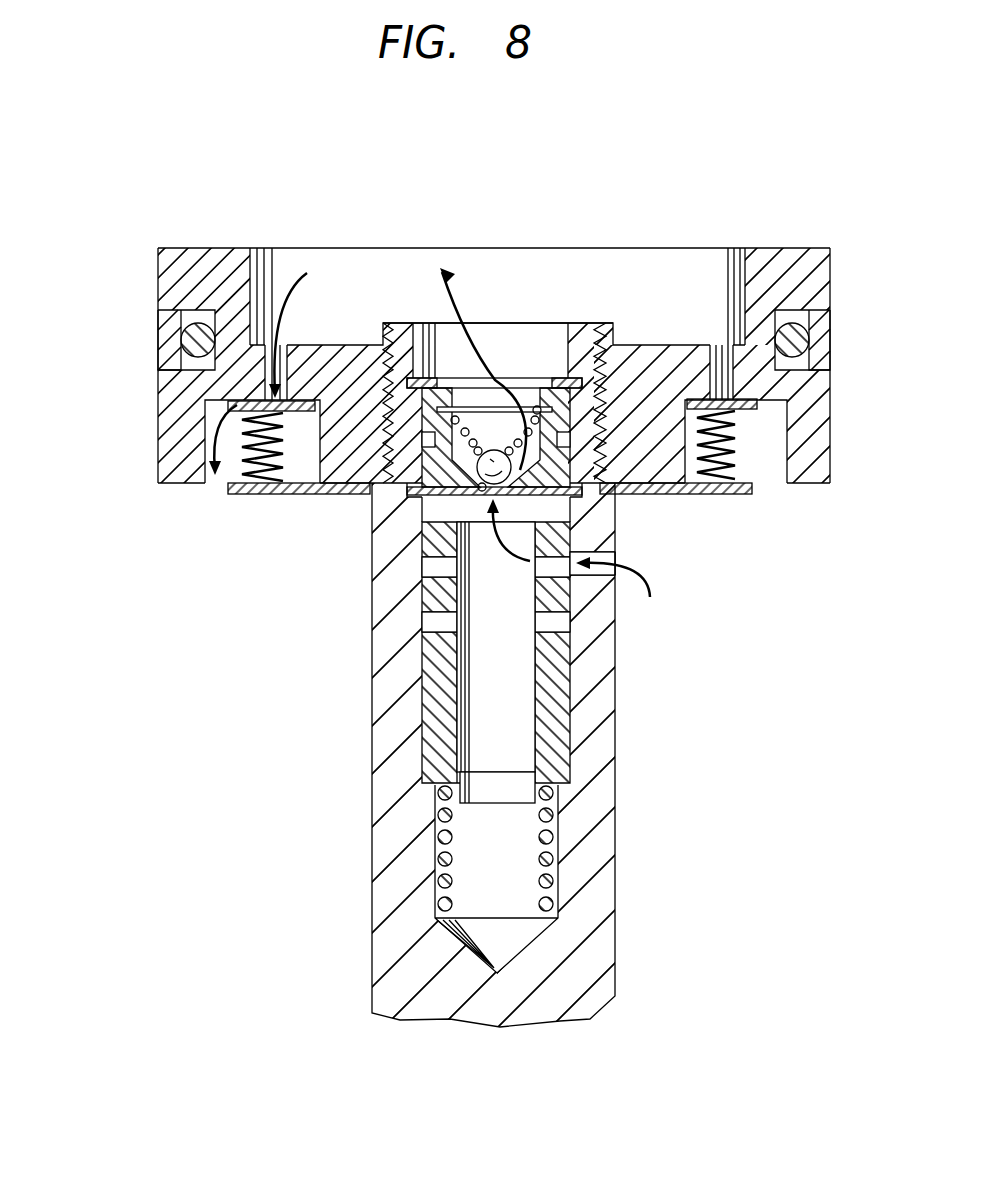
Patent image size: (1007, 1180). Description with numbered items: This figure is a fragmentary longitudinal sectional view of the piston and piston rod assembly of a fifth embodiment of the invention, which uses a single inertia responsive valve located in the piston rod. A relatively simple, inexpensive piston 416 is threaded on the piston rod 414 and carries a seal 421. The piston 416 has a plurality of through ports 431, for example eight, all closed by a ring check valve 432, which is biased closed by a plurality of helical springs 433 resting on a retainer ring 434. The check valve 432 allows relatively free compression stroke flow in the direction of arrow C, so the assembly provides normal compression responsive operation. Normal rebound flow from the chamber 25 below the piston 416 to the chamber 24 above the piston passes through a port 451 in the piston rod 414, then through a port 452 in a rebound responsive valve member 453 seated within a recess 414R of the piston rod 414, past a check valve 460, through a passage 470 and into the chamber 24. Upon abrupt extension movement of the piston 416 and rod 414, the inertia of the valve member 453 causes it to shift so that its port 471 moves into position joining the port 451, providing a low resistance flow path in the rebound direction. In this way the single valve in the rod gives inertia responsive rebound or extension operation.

The piston 416 is at (228, 256).
The seal 421 is at (160, 336).
The through ports 431 is at (718, 345).
The ring check valve 432 is at (777, 404).
The helical springs 433 is at (736, 450).
The retainer ring 434 is at (640, 495).
The chamber 24 is at (582, 191).
The chamber 25 is at (782, 589).
The passage 470 is at (493, 423).
The check valve 460 is at (478, 481).
The piston rod 414 is at (372, 655).
The recess 414R is at (438, 717).
The rebound responsive valve member 453 is at (570, 746).
The port 452 is at (563, 570).
The port 451 is at (613, 608).
The port 471 is at (552, 625).
The arrow C is at (268, 364).